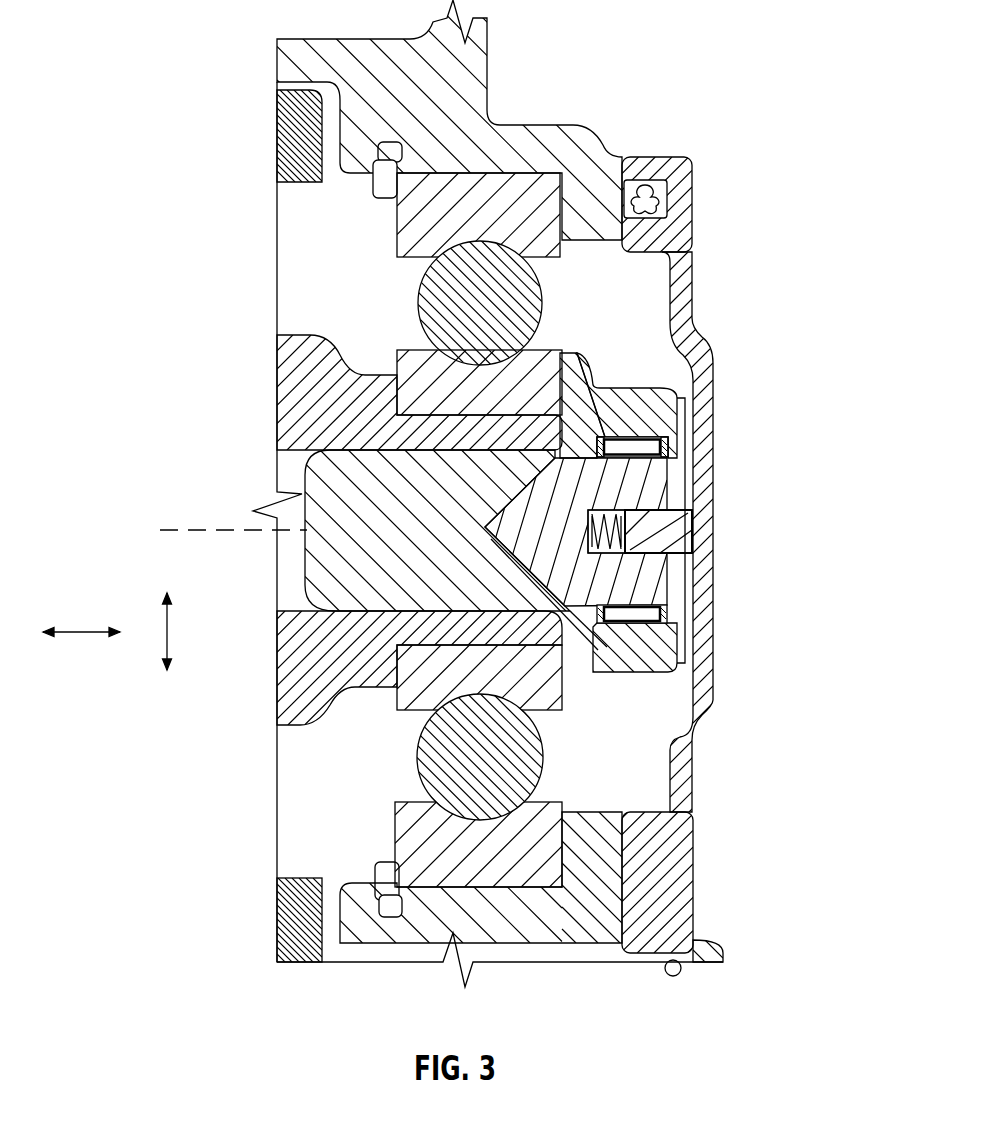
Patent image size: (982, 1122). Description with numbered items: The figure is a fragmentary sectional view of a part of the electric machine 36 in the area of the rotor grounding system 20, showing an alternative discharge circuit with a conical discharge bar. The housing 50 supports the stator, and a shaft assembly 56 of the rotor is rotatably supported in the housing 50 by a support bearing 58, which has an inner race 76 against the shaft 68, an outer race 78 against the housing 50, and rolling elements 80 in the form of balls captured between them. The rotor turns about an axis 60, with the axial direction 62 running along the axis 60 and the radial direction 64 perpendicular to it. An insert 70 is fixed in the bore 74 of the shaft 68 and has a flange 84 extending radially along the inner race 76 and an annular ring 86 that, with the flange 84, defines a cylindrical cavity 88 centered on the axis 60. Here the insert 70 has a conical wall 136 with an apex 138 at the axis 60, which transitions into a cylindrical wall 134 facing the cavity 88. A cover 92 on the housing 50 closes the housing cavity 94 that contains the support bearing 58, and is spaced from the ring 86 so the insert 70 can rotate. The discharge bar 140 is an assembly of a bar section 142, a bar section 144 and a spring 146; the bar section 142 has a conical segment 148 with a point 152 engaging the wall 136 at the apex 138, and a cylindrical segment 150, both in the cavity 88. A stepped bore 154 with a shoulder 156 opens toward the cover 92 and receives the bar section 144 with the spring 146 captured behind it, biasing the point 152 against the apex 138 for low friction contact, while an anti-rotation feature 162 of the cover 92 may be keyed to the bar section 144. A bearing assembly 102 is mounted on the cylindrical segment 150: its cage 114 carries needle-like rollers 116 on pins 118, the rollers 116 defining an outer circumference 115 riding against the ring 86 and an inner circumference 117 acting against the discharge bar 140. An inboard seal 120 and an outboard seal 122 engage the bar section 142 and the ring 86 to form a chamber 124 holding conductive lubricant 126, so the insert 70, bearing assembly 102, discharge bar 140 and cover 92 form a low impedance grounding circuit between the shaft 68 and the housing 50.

The rotor grounding system 20 is at (714, 309).
The electric machine 36 is at (676, 137).
The housing 50 is at (466, 85).
The shaft assembly 56 is at (303, 730).
The support bearing 58 is at (400, 782).
The axis 60 is at (185, 530).
The axial direction 62 is at (80, 637).
The radial direction 64 is at (163, 630).
The shaft 68 is at (319, 409).
The insert 70 is at (300, 562).
The bore 74 is at (280, 463).
The inner race 76 is at (464, 399).
The outer race 78 is at (464, 229).
The rolling elements 80 is at (466, 316).
The flange 84 is at (573, 352).
The ring 86 is at (672, 420).
The cavity 88 is at (678, 592).
The cover 92 is at (707, 707).
The cavity 94 is at (603, 793).
The bearing assembly 102 is at (676, 447).
The cage 114 is at (600, 415).
The outer circumference 115 is at (637, 420).
The rollers 116 is at (682, 455).
The inner circumference 117 is at (648, 455).
The pins 118 is at (662, 430).
The inboard seal 120 is at (595, 650).
The outboard seal 122 is at (685, 602).
The chamber 124 is at (612, 640).
The lubricant 126 is at (660, 628).
The wall 134 is at (670, 620).
The wall 136 is at (530, 587).
The apex 138 is at (485, 527).
The discharge bar 140 is at (544, 468).
The bar section 142 is at (555, 594).
The bar section 144 is at (696, 537).
The spring 146 is at (538, 480).
The conical segment 148 is at (523, 557).
The cylindrical segment 150 is at (692, 506).
The point 152 is at (482, 530).
The bore 154 is at (692, 520).
The shoulder 156 is at (617, 554).
The anti-rotation feature 162 is at (692, 557).